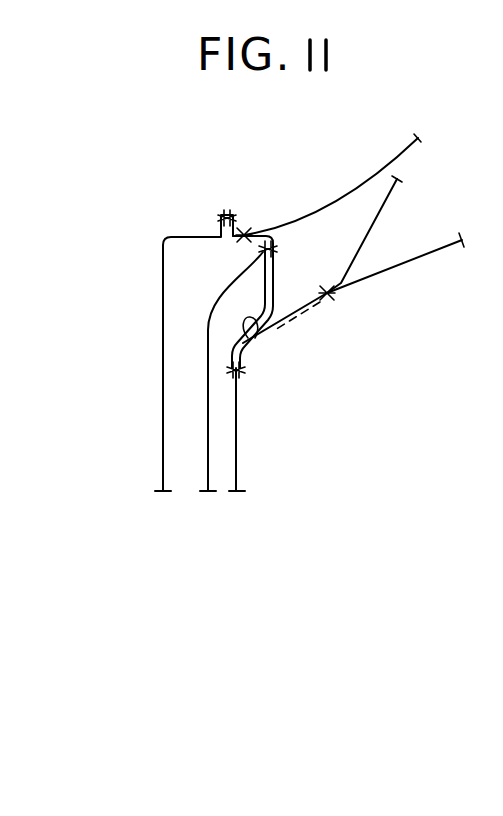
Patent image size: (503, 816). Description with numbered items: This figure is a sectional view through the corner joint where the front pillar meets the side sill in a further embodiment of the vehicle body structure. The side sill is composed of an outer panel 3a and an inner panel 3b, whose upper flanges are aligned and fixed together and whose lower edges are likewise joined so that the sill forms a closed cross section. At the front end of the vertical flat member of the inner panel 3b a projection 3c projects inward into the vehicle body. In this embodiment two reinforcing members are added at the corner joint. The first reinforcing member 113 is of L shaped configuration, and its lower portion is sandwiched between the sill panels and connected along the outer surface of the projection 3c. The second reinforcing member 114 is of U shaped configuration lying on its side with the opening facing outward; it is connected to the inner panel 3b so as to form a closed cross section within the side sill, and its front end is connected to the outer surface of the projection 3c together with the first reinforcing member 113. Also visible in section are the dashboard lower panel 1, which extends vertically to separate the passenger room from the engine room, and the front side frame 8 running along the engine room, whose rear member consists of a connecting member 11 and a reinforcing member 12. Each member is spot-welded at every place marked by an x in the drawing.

The dashboard lower panel 1 is at (418, 258).
The front side frame 8 is at (370, 167).
The connecting member 11 is at (318, 212).
The reinforcing member 12 is at (388, 208).
The outer panel 3a is at (165, 465).
The inner panel 3b is at (238, 468).
The projection 3c is at (276, 270).
The first reinforcing member 113 is at (248, 338).
The second reinforcing member 114 is at (208, 423).